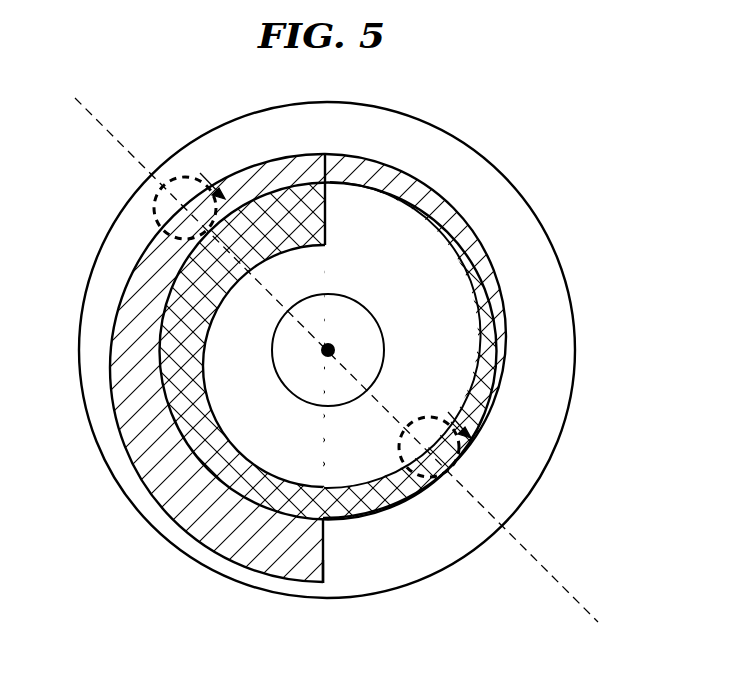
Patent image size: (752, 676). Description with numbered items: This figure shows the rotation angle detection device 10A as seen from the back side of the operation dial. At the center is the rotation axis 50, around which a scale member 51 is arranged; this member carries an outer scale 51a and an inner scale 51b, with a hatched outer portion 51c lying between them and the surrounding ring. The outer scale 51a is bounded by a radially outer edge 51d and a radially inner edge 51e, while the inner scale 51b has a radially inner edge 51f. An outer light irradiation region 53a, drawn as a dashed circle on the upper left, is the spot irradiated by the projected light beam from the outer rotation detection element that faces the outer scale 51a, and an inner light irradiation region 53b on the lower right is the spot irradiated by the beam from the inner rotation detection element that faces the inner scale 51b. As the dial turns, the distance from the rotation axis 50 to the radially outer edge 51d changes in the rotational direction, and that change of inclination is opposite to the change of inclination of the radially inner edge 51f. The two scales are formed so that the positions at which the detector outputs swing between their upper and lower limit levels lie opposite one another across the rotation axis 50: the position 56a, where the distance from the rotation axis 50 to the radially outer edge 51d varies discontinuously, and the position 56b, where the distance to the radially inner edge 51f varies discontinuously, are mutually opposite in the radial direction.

The rotation angle detection device 10A is at (570, 148).
The rotation axis 50 is at (330, 350).
The ring member 51 is at (458, 138).
The outer scale 51a is at (313, 567).
The inner scale 51b is at (383, 515).
The thick outer portion 51c is at (225, 567).
The radially outer edge of the outer scale 51d is at (188, 530).
The radially inner edge of the outer scale 51e is at (177, 470).
The radially inner edge of the inner scale 51f is at (200, 430).
The outer light irradiation region 53a is at (155, 192).
The inner light irradiation region 53b is at (467, 457).
The position where the distance to the radially outer edge varies discontinuously 56a is at (325, 550).
The position where the distance to the radially inner edge varies discontinuously 56b is at (325, 203).